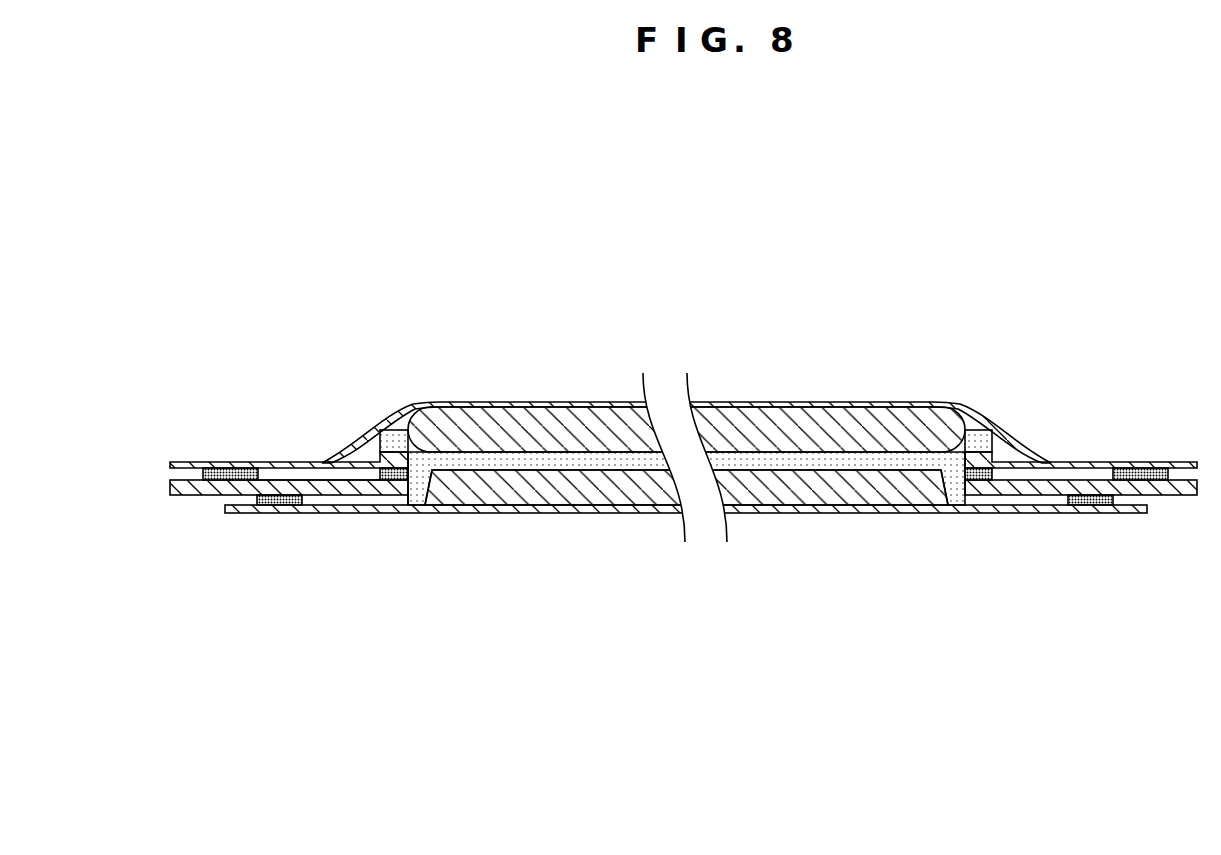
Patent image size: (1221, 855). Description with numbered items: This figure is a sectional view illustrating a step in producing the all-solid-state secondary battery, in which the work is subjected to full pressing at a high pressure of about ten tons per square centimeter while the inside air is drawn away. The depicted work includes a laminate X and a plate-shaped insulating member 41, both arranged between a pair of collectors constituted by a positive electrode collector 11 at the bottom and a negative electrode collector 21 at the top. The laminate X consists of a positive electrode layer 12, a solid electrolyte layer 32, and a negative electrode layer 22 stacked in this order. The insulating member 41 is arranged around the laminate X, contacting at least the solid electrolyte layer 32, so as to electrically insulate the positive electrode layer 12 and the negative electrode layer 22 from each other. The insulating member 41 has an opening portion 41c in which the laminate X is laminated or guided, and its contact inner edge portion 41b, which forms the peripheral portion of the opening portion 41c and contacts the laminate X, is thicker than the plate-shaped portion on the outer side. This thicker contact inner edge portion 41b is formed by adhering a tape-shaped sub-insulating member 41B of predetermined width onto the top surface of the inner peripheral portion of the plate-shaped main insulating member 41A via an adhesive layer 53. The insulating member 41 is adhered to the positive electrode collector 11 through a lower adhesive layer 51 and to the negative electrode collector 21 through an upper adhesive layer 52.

The positive electrode collector 11 is at (558, 513).
The positive electrode layer 12 is at (878, 490).
The negative electrode collector 21 is at (561, 402).
The negative electrode layer 22 is at (922, 316).
The solid electrolyte layer 32 is at (838, 462).
The plate-shaped insulating member 41 is at (292, 472).
The plate-shaped main insulating member 41A is at (227, 492).
The tape-shaped sub-insulating member 41B is at (397, 458).
The contact inner edge portion 41b is at (371, 474).
The opening portion 41c is at (420, 493).
The lower adhesive layer 51 is at (305, 503).
The upper adhesive layer 52 is at (227, 477).
The adhesive layer 53 is at (381, 452).
The laminate X is at (686, 391).